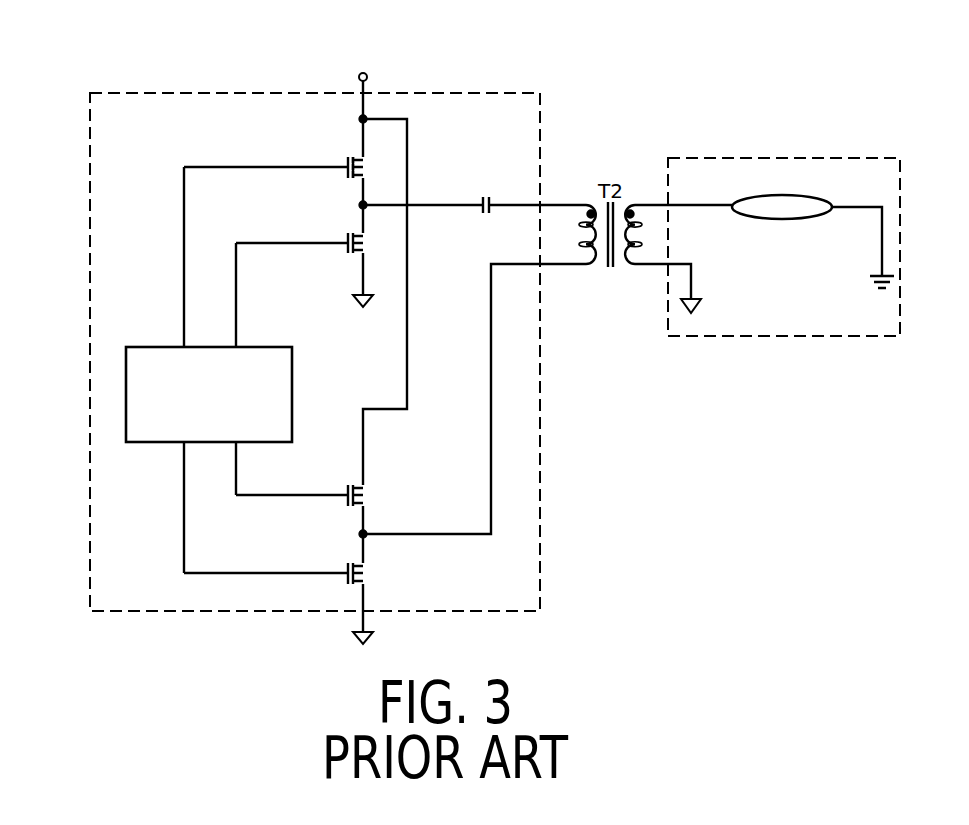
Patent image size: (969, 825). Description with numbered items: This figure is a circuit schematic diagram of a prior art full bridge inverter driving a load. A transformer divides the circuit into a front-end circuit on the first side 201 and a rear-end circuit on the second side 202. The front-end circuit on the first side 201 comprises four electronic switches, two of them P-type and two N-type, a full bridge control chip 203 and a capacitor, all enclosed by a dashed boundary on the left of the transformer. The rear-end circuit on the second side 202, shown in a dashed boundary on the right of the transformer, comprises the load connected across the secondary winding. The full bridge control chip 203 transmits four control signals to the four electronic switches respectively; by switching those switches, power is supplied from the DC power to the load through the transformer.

The first side 201 is at (468, 92).
The second side 202 is at (784, 158).
The full bridge control chip 203 is at (126, 395).